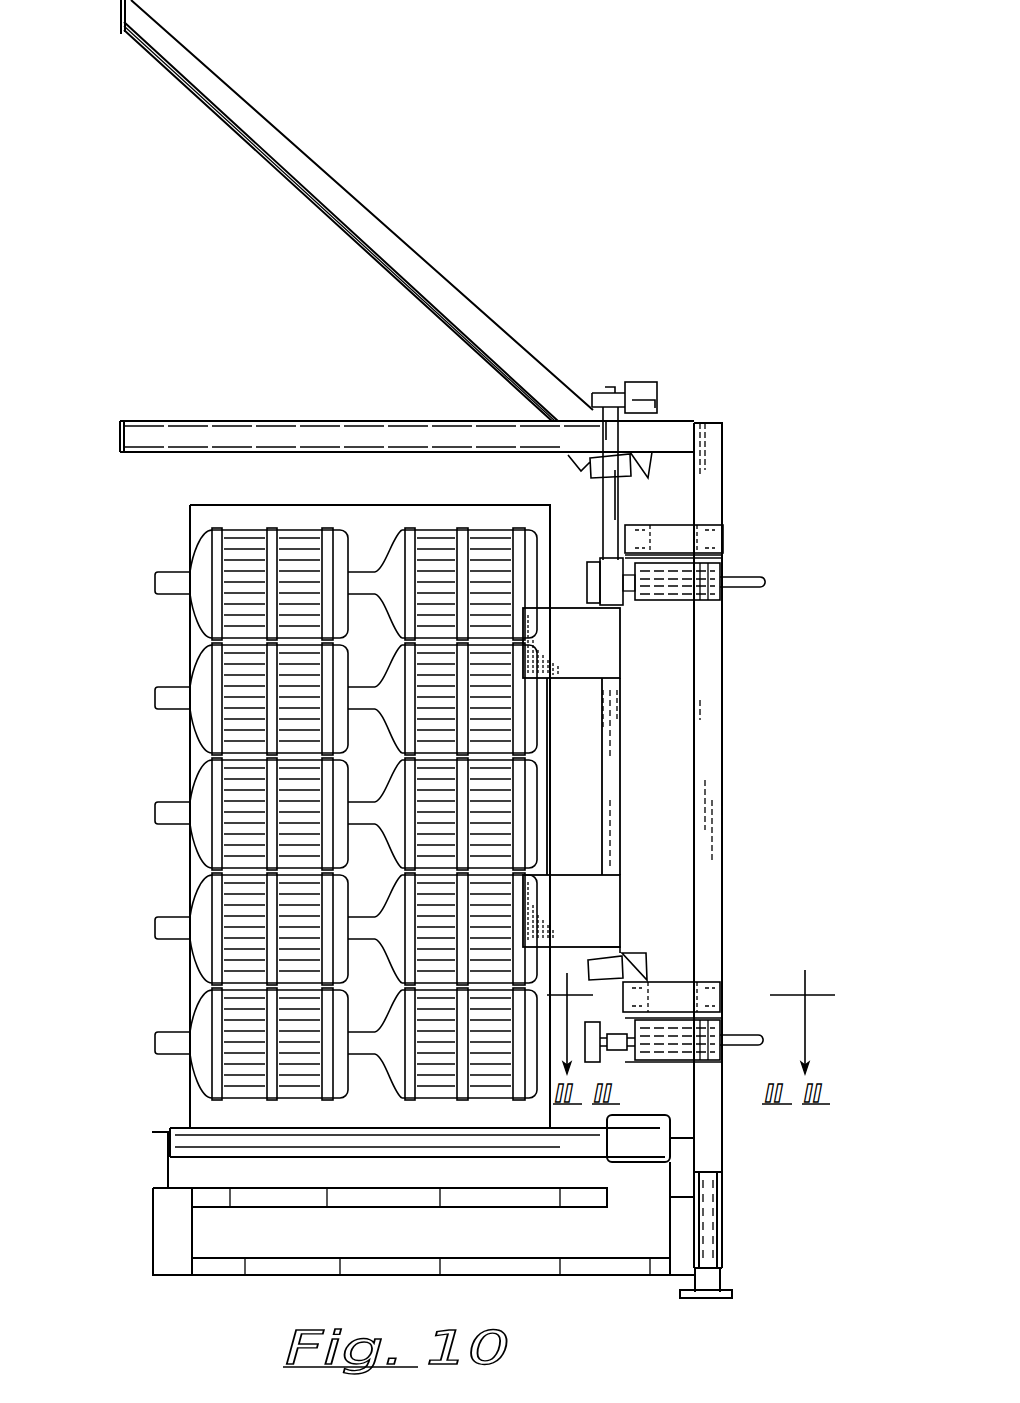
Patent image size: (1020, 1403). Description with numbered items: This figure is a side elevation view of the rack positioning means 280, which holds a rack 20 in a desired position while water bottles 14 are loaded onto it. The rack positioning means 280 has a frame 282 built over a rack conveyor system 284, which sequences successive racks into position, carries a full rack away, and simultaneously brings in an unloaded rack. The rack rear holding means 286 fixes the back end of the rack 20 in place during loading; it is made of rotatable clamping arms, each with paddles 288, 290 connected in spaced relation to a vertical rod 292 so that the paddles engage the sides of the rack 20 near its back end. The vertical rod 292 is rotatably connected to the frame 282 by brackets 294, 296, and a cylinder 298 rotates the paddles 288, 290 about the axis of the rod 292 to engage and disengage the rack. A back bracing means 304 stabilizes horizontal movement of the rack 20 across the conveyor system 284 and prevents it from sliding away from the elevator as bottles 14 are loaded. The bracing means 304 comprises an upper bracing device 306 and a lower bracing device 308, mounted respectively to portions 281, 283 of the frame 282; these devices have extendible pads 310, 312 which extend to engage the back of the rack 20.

The water bottles 14 is at (200, 703).
The rack 20 is at (188, 526).
The rack positioning means 280 is at (736, 316).
The portion of frame 281 is at (662, 543).
The frame 282 is at (722, 452).
The portion of frame 283 is at (670, 992).
The rack conveyor system 284 is at (133, 1192).
The rack rear holding means 286 is at (634, 672).
The paddle 288 is at (600, 651).
The paddle 290 is at (602, 896).
The vertical rod 292 is at (614, 787).
The bracket 294 is at (645, 455).
The bracket 296 is at (628, 965).
The cylinder 298 is at (642, 390).
The back bracing means 304 is at (742, 548).
The upper bracing device 306 is at (738, 572).
The lower bracing device 308 is at (738, 1020).
The extendible pad 310 is at (590, 582).
The extendible pad 312 is at (595, 1050).